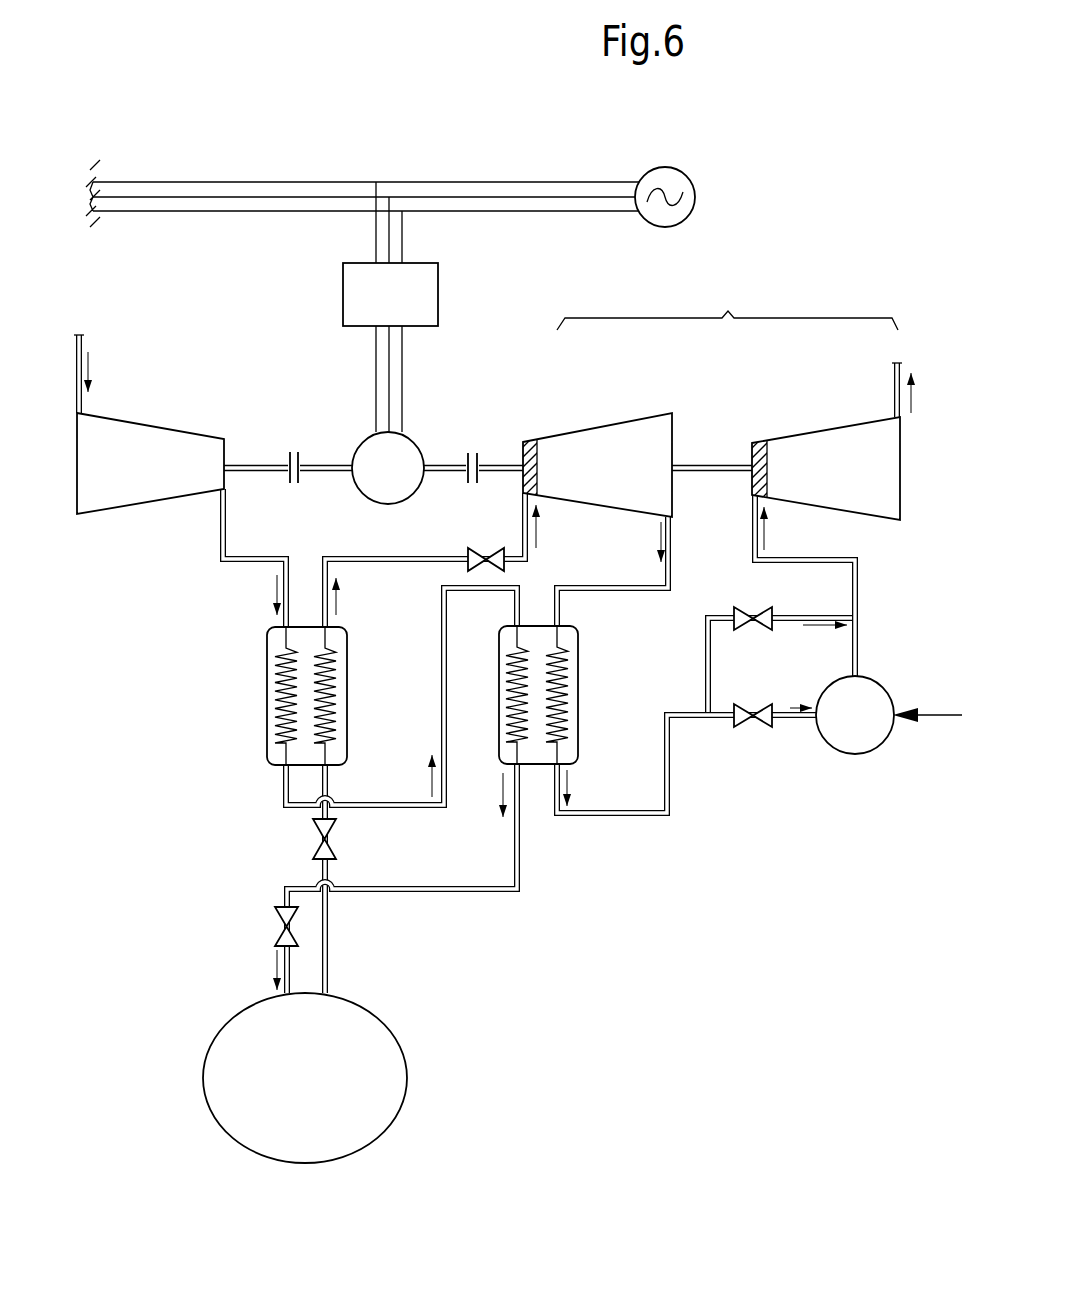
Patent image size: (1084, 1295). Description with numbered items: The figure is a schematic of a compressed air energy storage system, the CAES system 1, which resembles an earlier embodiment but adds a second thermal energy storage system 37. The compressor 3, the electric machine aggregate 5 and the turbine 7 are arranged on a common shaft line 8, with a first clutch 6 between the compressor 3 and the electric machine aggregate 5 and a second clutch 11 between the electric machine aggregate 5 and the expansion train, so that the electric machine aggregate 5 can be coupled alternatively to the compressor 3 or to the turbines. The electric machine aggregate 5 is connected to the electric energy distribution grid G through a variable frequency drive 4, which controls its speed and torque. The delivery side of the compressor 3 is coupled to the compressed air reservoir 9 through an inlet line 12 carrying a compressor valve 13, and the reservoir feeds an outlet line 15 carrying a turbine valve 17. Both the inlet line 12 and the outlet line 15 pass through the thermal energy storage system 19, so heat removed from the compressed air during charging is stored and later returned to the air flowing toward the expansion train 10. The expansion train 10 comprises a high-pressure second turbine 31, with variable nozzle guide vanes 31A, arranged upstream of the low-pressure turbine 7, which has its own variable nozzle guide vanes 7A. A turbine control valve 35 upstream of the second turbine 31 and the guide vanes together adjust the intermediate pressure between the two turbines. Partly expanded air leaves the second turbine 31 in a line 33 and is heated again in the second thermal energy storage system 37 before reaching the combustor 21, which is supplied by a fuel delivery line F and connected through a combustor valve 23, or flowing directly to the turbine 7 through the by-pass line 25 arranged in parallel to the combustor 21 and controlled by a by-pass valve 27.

The CAES system 1 is at (298, 381).
The compressor 3 is at (140, 430).
The variable frequency drive 4 is at (418, 298).
The electric machine aggregate 5 is at (349, 443).
The first clutch 6 is at (285, 479).
The turbine 7 is at (857, 450).
The variable nozzle guide vanes 7A is at (755, 440).
The shaft line 8 is at (276, 463).
The compressed air reservoir 9 is at (375, 1078).
The expansion train 10 is at (727, 308).
The second clutch 11 is at (464, 483).
The inlet line 12 is at (232, 565).
The compressor valve 13 is at (285, 915).
The outlet line 15 is at (380, 557).
The turbine valve 17 is at (334, 840).
The thermal energy storage system 19 is at (273, 693).
The combustor 21 is at (862, 690).
The combustor valve 23 is at (748, 728).
The by-pass line 25 is at (805, 612).
The by-pass valve 27 is at (762, 625).
The second turbine 31 is at (622, 450).
The variable nozzle guide vanes 31A is at (527, 440).
The line 33 is at (678, 572).
The turbine control valve 35 is at (475, 548).
The second thermal energy storage system 37 is at (572, 680).
The electric energy distribution grid G is at (70, 182).
The fuel delivery line F is at (945, 713).